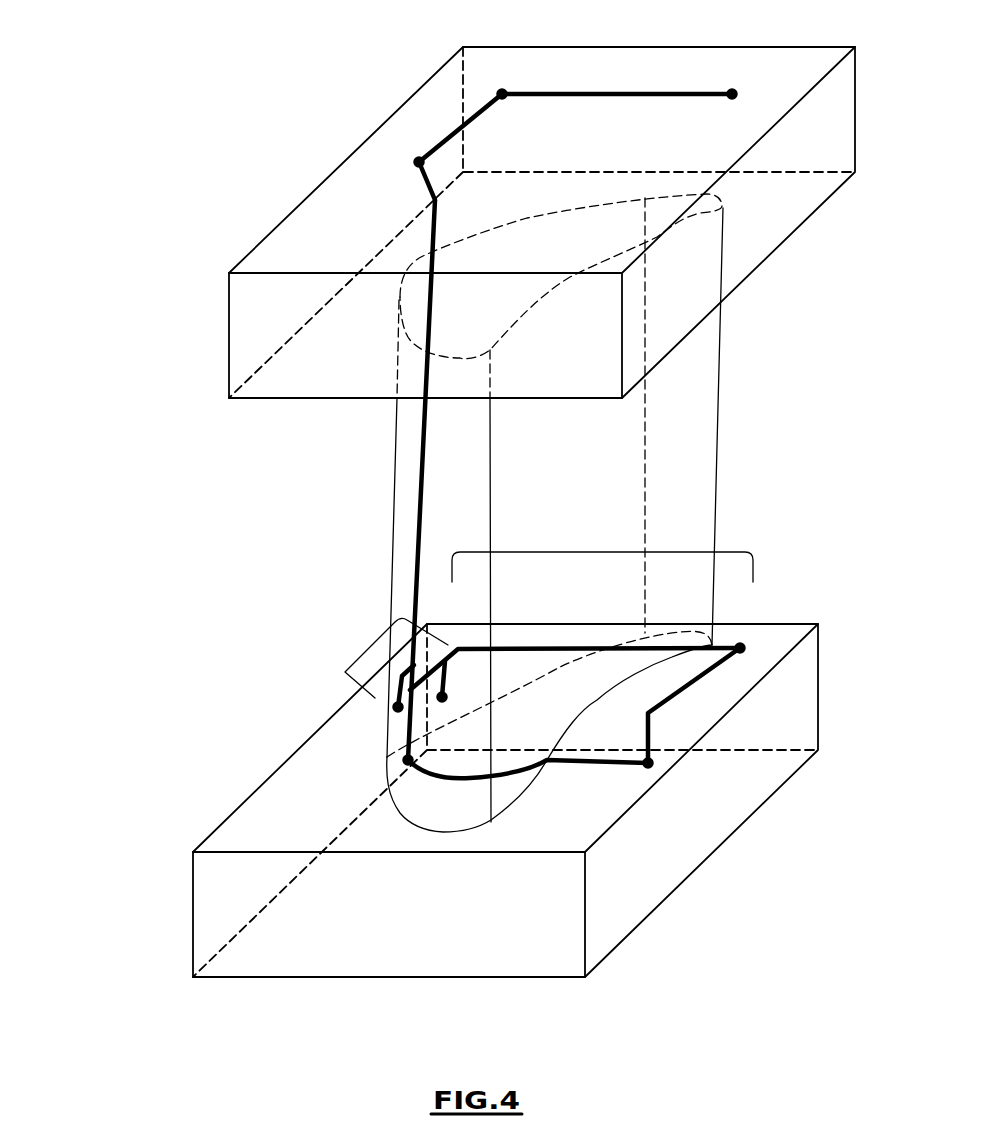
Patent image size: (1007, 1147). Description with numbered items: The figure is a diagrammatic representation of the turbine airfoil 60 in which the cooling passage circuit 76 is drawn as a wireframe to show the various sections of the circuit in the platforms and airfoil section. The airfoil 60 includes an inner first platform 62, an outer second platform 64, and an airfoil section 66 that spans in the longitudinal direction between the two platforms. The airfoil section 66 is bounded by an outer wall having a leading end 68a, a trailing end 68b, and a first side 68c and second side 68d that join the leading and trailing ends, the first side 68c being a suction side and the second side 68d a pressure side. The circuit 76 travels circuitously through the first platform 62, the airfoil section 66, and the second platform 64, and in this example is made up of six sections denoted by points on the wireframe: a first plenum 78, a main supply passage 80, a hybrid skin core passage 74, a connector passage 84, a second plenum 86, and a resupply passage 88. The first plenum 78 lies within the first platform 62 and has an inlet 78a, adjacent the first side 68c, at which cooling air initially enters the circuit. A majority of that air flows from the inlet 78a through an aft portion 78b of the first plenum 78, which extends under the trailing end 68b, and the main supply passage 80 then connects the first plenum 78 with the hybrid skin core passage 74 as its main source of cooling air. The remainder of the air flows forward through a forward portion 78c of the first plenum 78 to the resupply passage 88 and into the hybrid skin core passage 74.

The turbine airfoil 60 is at (116, 812).
The first platform 62 is at (632, 888).
The second platform 64 is at (778, 203).
The airfoil section 66 is at (564, 478).
The leading end 68a is at (395, 482).
The trailing end 68b is at (718, 377).
The first side 68c is at (526, 217).
The second side 68d is at (520, 317).
The hybrid skin core passage 74 is at (415, 545).
The cooling passage circuit 76 is at (737, 638).
The first plenum 78 is at (537, 647).
The inlet 78a is at (445, 698).
The aft portion 78b is at (603, 550).
The forward portion 78c is at (372, 645).
The main supply passage 80 is at (603, 765).
The connector passage 84 is at (421, 182).
The second plenum 86 is at (650, 92).
The resupply passage 88 is at (400, 702).